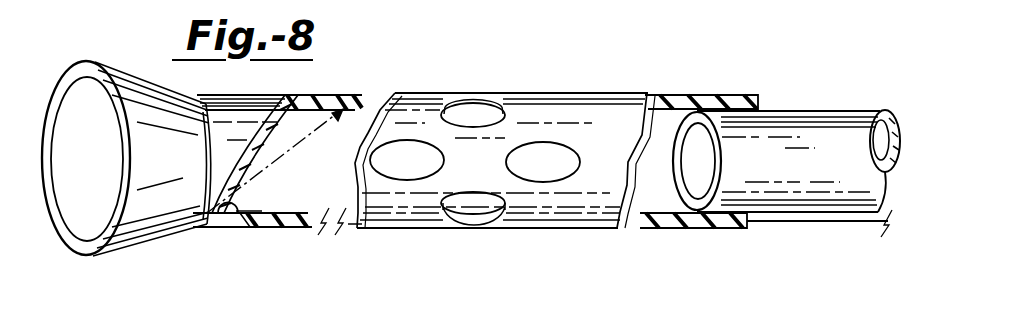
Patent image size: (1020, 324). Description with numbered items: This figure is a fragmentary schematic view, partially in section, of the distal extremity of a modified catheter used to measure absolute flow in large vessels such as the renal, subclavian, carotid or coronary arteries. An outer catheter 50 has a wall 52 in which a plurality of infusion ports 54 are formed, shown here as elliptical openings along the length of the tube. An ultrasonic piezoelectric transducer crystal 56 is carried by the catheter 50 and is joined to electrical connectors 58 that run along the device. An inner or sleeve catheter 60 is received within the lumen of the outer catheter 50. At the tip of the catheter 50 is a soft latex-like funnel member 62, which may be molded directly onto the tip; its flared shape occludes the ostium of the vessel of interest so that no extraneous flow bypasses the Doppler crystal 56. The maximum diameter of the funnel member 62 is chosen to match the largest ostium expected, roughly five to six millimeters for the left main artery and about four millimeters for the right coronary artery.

The outer catheter 50 is at (446, 124).
The wall 52 is at (720, 94).
The infusion ports 54 is at (403, 140).
The ultrasonic piezoelectric transducer crystal 56 is at (215, 225).
The electrical connectors 58 is at (784, 222).
The inner or sleeve catheter 60 is at (800, 110).
The funnel member 62 is at (122, 248).